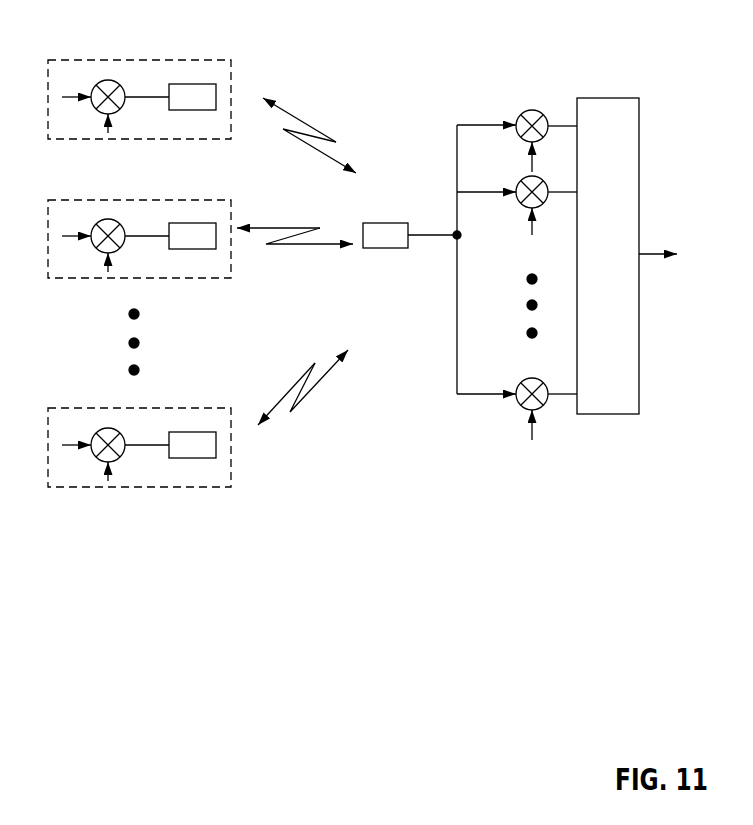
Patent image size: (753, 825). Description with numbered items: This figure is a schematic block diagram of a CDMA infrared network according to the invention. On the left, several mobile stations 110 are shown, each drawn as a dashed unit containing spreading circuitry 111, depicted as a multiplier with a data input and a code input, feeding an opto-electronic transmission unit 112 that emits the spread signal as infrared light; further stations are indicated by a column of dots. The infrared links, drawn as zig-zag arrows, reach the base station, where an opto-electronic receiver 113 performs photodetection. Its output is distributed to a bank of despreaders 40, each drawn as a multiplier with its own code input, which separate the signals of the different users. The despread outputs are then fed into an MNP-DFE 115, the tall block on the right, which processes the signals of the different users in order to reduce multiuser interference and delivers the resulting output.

The mobile station 110 is at (125, 104).
The spreading circuitry 111 is at (97, 81).
The opto-electronic transmission unit 112 is at (208, 81).
The opto-electronic receiver 113 is at (400, 223).
The despreader 40 is at (533, 108).
The MNP-DFE 115 is at (609, 103).